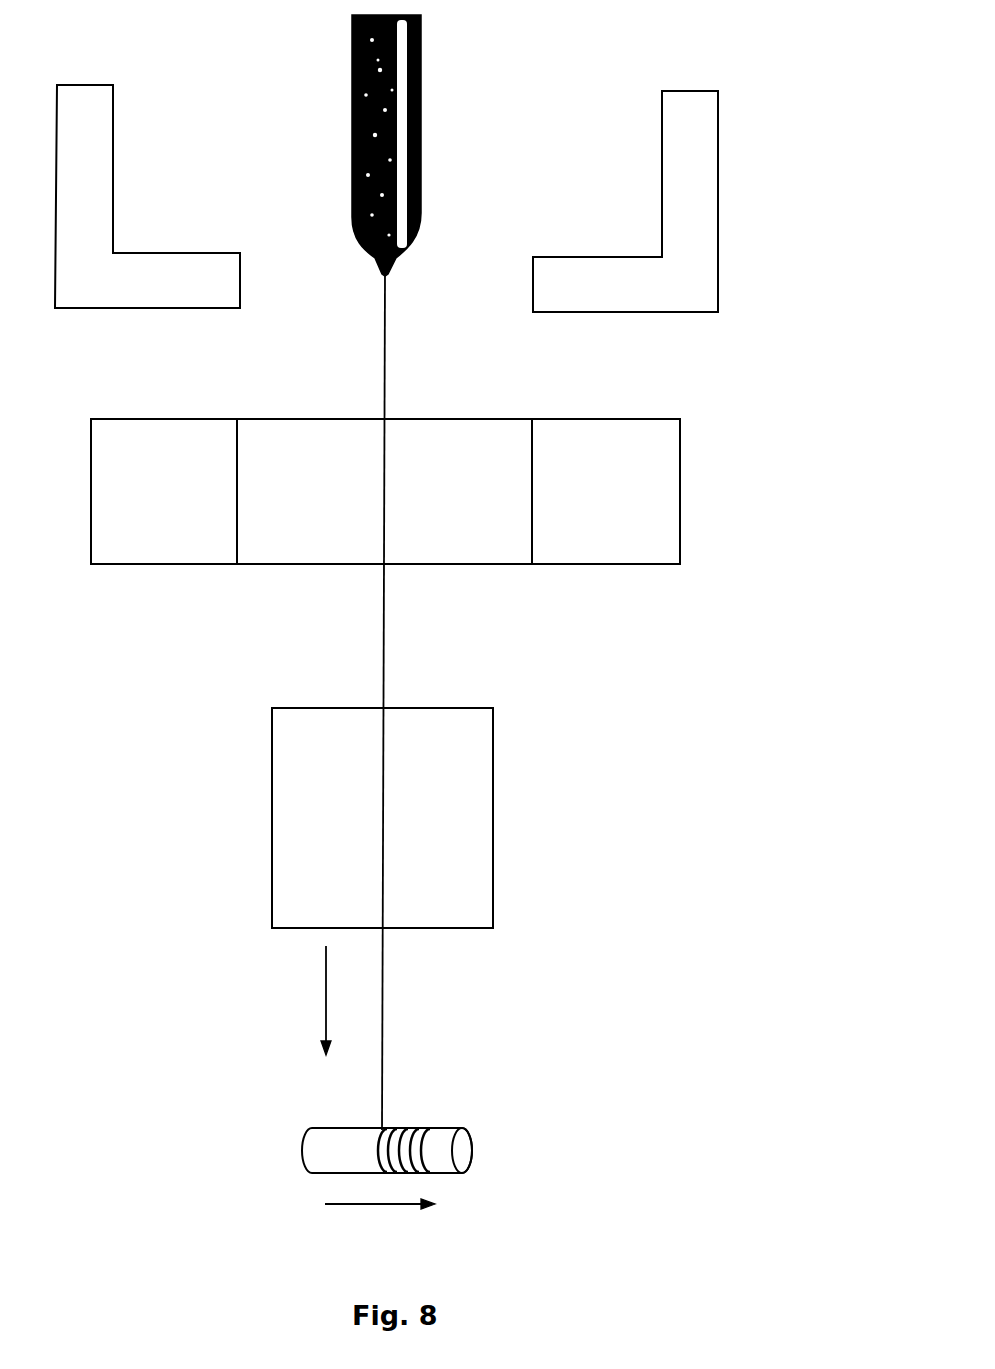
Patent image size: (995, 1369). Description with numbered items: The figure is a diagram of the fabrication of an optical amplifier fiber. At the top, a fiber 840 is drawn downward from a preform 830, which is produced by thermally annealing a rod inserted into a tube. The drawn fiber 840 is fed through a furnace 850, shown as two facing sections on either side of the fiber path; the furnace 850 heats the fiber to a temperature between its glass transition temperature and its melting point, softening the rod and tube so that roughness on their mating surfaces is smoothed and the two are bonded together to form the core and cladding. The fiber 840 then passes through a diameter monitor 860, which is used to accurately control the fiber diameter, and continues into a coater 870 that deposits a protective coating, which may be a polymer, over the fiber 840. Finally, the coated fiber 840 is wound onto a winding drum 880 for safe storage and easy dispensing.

The pre-form 830 is at (447, 92).
The fiber 840 is at (369, 603).
The furnace 850 is at (749, 188).
The diameter monitor 860 is at (702, 450).
The coater 870 is at (525, 780).
The winding drum 880 is at (479, 1105).